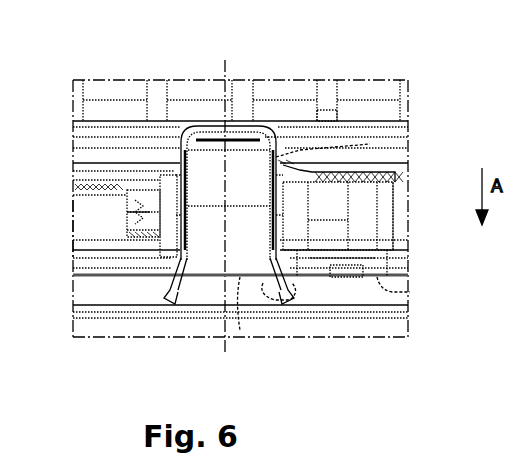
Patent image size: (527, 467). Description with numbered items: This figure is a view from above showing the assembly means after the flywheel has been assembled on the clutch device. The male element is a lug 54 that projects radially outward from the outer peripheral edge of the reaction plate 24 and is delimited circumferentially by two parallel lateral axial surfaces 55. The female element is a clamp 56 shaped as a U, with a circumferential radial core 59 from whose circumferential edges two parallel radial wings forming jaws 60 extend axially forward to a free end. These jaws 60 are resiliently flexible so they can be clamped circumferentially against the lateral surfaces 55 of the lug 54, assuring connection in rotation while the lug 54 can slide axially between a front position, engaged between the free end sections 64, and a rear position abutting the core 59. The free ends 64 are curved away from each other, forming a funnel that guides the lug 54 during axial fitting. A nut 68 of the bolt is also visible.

The reaction plate 24 is at (87, 227).
The lug 54 is at (223, 205).
The lateral axial surfaces 55 is at (223, 200).
The clamp 56 is at (370, 144).
The core 59 is at (244, 130).
The jaws 60 is at (150, 205).
The free ends 64 is at (177, 290).
The nut 68 is at (322, 260).